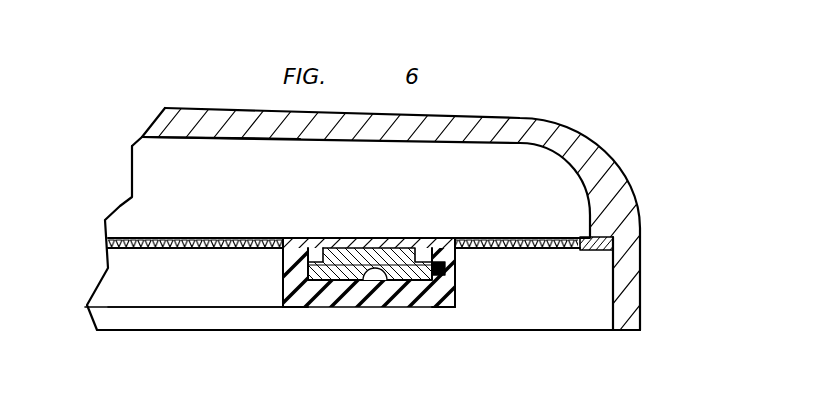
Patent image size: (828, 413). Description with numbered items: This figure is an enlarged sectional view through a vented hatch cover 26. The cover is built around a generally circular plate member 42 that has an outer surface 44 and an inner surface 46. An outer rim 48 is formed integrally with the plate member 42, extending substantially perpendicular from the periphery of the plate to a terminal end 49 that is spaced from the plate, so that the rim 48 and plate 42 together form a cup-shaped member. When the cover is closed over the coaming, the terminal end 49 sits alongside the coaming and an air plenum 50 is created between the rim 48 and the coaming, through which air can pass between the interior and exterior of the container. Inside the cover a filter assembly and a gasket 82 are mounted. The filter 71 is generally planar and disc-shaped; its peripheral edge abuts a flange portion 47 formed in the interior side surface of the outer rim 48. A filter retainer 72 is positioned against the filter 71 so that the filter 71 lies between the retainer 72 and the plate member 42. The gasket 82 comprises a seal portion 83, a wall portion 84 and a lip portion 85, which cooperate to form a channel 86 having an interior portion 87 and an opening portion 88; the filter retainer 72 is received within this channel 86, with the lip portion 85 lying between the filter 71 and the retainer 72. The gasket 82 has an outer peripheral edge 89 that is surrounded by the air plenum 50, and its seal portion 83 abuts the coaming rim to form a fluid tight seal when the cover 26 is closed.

The vented hatch cover 26 is at (608, 114).
The circular plate member 42 is at (162, 118).
The outer surface 44 is at (200, 107).
The inner surface 46 is at (180, 140).
The flange portion 47 is at (598, 236).
The outer rim 48 is at (630, 262).
The terminal end 49 is at (628, 332).
The air plenum 50 is at (536, 303).
The filter 71 is at (512, 237).
The filter retainer 72 is at (393, 257).
The gasket 82 is at (335, 308).
The seal portion 83 is at (305, 308).
The wall portion 84 is at (283, 265).
The lip portion 85 is at (310, 250).
The channel 86 is at (386, 282).
The interior portion 87 is at (458, 286).
The opening portion 88 is at (328, 248).
The outer peripheral edge 89 is at (457, 307).